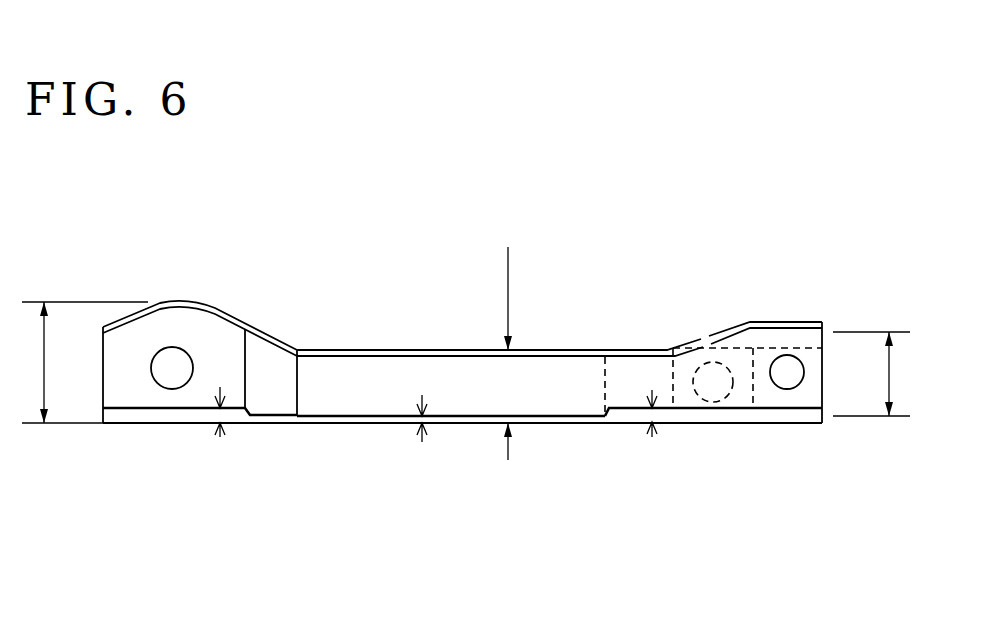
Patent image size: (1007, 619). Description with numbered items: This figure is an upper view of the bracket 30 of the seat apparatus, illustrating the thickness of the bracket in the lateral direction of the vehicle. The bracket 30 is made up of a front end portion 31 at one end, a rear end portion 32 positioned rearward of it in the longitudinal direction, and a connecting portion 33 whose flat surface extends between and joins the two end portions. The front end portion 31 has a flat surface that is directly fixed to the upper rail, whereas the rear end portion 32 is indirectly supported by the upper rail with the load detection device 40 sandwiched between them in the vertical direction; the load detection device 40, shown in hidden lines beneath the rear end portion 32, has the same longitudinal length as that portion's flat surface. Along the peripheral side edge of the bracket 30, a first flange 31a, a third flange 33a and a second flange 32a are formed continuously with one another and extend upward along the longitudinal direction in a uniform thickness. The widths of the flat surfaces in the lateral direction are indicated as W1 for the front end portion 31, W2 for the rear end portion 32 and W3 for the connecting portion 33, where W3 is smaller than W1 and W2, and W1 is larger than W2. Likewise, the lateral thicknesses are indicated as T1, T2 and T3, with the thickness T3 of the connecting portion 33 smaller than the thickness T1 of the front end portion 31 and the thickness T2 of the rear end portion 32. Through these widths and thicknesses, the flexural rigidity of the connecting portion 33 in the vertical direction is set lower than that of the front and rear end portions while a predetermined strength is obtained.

The bracket 30 is at (203, 182).
The front end portion 31 is at (296, 435).
The first flange 31a is at (205, 304).
The rear end portion 32 is at (823, 435).
The second flange 32a is at (782, 321).
The connecting portion 33 is at (604, 435).
The third flange 33a is at (427, 348).
The load detection device 40 is at (704, 342).
The width of the flat surface of the front end portion W1 is at (80, 362).
The width of the flat surface of the rear end portion W2 is at (871, 374).
The width of the flat surface of the connecting portion W3 is at (493, 353).
The thickness of the front end portion T1 is at (221, 395).
The thickness of the rear end portion T2 is at (651, 400).
The thickness of the connecting portion T3 is at (421, 404).